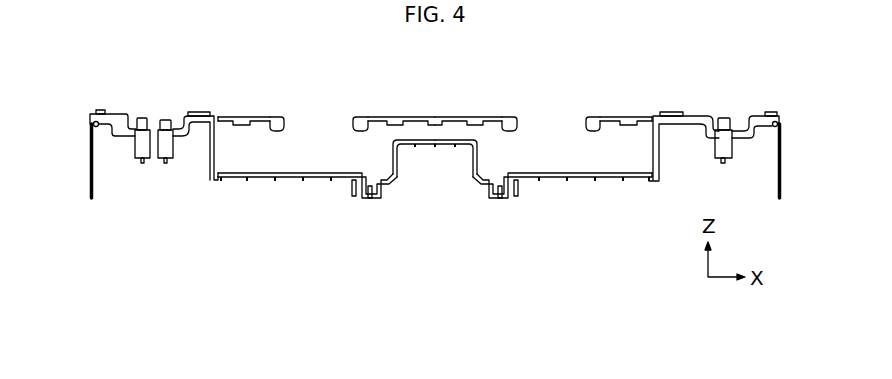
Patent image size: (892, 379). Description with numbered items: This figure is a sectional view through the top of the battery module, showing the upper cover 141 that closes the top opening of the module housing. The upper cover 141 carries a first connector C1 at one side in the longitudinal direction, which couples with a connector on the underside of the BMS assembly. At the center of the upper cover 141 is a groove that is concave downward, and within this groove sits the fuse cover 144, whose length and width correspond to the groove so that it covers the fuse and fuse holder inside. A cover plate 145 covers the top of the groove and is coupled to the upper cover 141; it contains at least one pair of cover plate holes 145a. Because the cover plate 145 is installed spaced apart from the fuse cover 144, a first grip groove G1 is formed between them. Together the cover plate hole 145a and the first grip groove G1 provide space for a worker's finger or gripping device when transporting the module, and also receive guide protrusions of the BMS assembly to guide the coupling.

The upper cover 141 is at (660, 148).
The fuse cover 144 is at (441, 162).
The cover plate 145 is at (393, 119).
The cover plate hole 145a is at (307, 123).
The first grip groove G1 is at (250, 142).
The first connector C1 is at (144, 118).